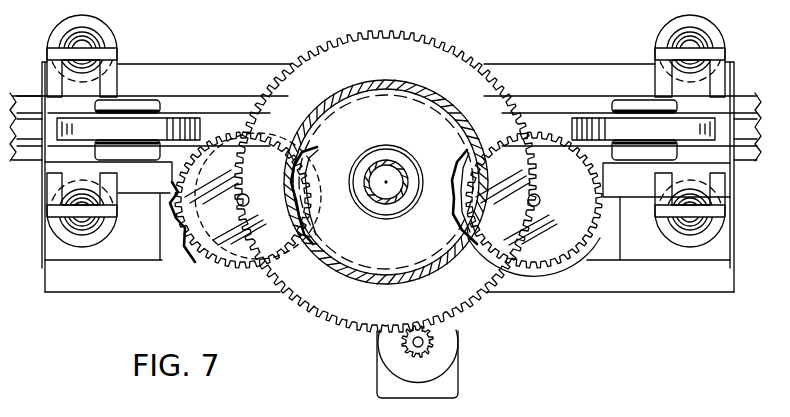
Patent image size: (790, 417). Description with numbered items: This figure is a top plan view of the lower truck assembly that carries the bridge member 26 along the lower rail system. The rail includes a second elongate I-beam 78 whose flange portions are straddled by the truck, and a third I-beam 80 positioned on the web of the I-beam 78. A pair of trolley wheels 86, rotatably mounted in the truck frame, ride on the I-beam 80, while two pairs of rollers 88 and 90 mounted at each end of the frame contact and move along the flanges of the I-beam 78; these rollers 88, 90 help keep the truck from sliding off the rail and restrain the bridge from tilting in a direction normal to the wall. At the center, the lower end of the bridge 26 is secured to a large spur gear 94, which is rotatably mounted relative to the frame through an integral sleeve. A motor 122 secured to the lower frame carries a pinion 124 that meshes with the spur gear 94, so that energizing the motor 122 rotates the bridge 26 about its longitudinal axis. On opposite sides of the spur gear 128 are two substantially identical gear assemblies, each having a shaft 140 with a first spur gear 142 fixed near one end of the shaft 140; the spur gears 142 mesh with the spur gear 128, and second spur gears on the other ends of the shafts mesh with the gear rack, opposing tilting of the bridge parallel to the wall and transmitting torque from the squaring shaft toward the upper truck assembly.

The bridge member 26 is at (347, 96).
The second elongate I-beam 78 is at (28, 104).
The third I-beam 80 is at (30, 130).
The trolley wheels 86 is at (168, 134).
The rollers 88 is at (104, 42).
The rollers 90 is at (713, 35).
The spur gear 94 is at (422, 58).
The motor 122 is at (448, 352).
The pinion 124 is at (432, 337).
The spur gear 128 is at (462, 203).
The shaft 140 is at (538, 196).
The first spur gear 142 is at (242, 244).